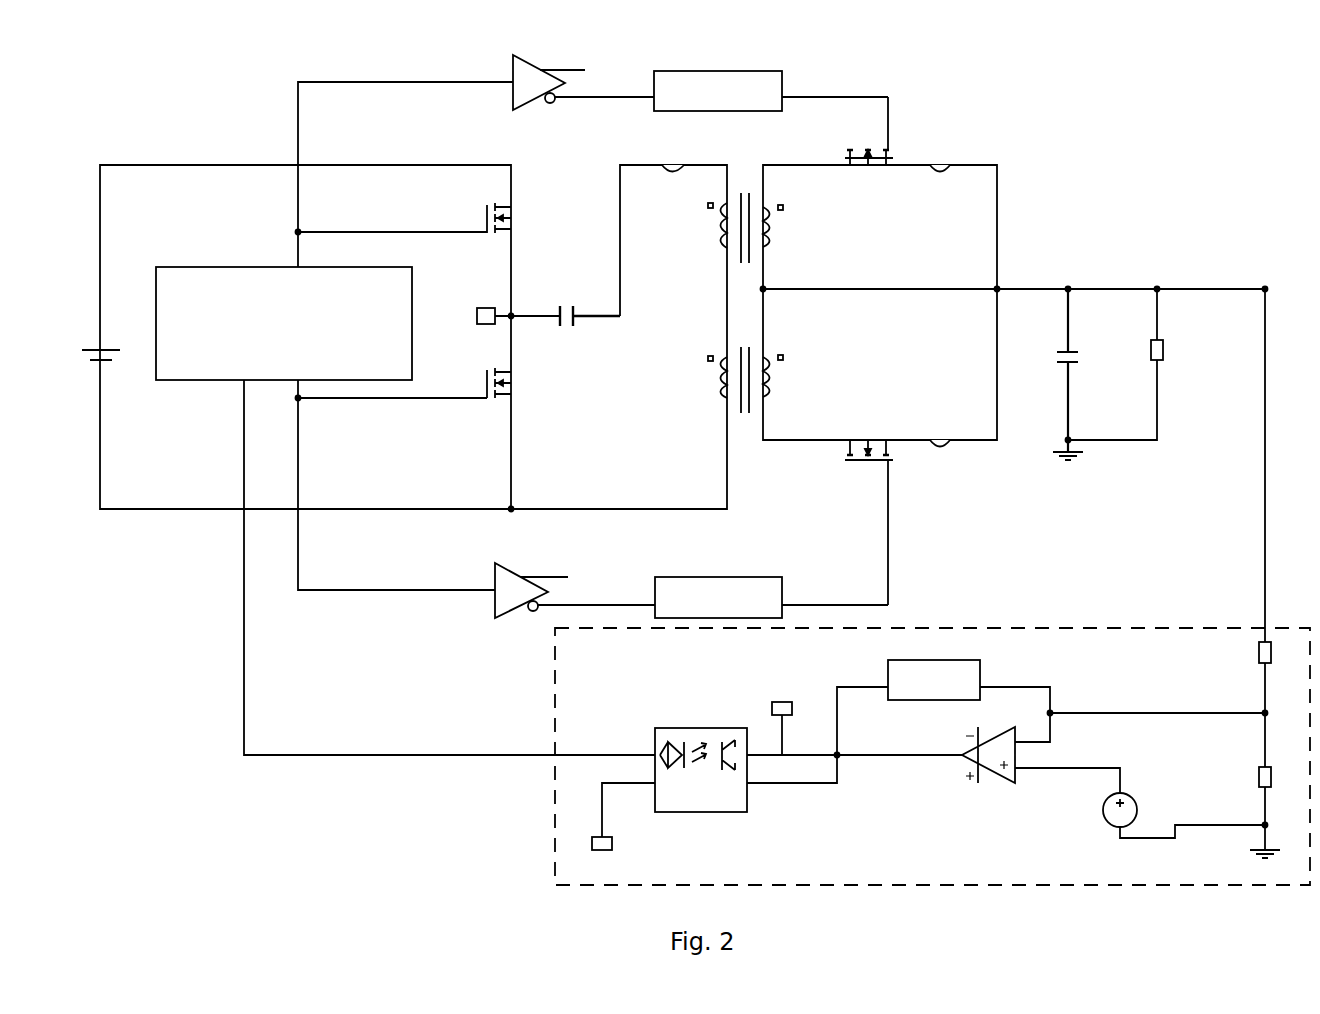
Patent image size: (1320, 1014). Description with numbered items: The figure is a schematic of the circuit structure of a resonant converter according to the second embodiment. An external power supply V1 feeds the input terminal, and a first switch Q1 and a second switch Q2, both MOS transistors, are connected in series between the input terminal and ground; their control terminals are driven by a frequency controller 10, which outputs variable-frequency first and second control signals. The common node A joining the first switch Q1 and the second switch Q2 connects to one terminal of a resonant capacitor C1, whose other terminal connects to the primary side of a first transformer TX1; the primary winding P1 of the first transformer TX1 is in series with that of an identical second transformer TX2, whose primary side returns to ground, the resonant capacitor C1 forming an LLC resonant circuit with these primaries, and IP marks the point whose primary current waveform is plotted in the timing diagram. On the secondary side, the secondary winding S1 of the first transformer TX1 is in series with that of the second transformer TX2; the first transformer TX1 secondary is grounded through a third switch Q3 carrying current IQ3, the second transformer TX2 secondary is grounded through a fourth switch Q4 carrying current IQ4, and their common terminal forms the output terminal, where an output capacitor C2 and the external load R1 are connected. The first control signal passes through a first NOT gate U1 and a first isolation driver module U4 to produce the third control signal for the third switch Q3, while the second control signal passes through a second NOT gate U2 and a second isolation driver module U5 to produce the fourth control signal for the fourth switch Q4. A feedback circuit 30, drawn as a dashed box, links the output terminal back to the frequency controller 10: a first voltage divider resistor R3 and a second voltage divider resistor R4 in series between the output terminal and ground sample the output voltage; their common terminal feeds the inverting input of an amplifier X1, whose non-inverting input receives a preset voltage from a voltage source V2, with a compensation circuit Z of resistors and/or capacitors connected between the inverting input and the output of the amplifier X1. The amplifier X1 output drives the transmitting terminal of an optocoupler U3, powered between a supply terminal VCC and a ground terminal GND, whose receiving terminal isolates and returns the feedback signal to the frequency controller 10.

The frequency controller 10 is at (330, 270).
The feedback circuit 30 is at (1155, 630).
The external power supply V1 is at (110, 338).
The first switch Q1 is at (486, 232).
The second switch Q2 is at (486, 398).
The node A is at (503, 316).
The resonant capacitor C1 is at (585, 330).
The current waveform location IP is at (673, 154).
The first transformer TX1 is at (749, 226).
The second transformer TX2 is at (749, 372).
The primary winding P1 is at (695, 225).
The secondary winding S1 is at (780, 228).
The third switch Q3 is at (844, 131).
The fourth switch Q4 is at (845, 522).
The current waveform at the third switch IQ3 is at (935, 154).
The current waveform at the fourth switch IQ4 is at (928, 430).
The output capacitor C2 is at (1082, 374).
The external load R1 is at (1131, 364).
The first NOT gate U1 is at (583, 71).
The second NOT gate U2 is at (575, 579).
The first isolation driver module U4 is at (769, 77).
The second isolation driver module U5 is at (770, 585).
The optocoupler U3 is at (745, 762).
The ground terminal GND is at (606, 858).
The supply terminal VCC is at (777, 714).
The compensation circuit Z is at (1076, 701).
The amplifier X1 is at (978, 769).
The voltage source V2 is at (1184, 808).
The first voltage divider resistor R3 is at (1282, 647).
The second voltage divider resistor R4 is at (1282, 767).